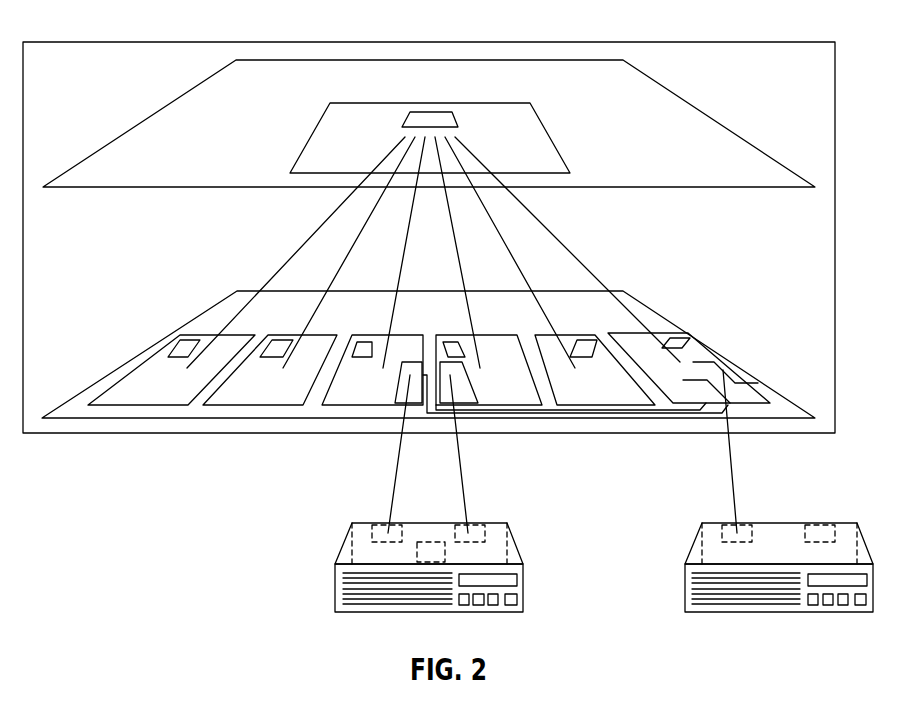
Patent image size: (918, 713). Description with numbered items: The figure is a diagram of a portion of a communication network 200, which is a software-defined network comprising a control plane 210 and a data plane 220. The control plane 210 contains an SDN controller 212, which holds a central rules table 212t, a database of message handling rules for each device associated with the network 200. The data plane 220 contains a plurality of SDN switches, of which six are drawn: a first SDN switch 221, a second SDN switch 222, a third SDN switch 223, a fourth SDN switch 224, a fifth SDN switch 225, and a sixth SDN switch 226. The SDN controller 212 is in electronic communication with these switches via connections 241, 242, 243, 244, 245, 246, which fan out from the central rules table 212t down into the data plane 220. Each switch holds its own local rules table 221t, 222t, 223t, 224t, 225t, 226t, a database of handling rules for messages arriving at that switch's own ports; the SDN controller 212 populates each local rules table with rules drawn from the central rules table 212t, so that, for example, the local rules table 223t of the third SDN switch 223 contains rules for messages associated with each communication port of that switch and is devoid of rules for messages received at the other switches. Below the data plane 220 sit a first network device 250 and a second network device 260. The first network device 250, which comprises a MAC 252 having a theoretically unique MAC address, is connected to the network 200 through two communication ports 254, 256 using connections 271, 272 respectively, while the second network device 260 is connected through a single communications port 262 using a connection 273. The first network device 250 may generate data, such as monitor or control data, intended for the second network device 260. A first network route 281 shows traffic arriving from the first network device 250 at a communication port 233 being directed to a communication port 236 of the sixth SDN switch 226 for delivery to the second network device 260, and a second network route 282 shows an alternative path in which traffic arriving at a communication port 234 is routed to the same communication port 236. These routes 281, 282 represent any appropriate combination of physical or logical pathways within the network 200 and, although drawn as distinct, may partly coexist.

The communication network 200 is at (183, 28).
The control plane 210 is at (603, 100).
The SDN controller 212 is at (527, 140).
The central rules table 212t is at (402, 122).
The data plane 220 is at (527, 323).
The first SDN switch 221 is at (175, 400).
The second SDN switch 222 is at (288, 400).
The third SDN switch 223 is at (390, 400).
The fourth SDN switch 224 is at (527, 400).
The fifth SDN switch 225 is at (617, 399).
The sixth SDN switch 226 is at (698, 344).
The local rules table 221t is at (170, 352).
The local rules table 222t is at (265, 340).
The local rules table 223t is at (365, 340).
The local rules table 224t is at (450, 340).
The local rules table 225t is at (580, 340).
The local rules table 226t is at (675, 337).
The communication port 233 is at (406, 375).
The communication port 234 is at (452, 375).
The communication port 236 is at (730, 372).
The connection 241 is at (268, 283).
The connection 242 is at (344, 262).
The connection 243 is at (406, 243).
The connection 244 is at (455, 240).
The connection 245 is at (516, 260).
The connection 246 is at (588, 270).
The first network device 250 is at (335, 588).
The MAC 252 is at (430, 540).
The communication port 254 is at (357, 527).
The communication port 256 is at (505, 535).
The second network device 260 is at (685, 590).
The communications port 262 is at (752, 530).
The connection 271 is at (390, 500).
The connection 272 is at (465, 478).
The connection 273 is at (727, 442).
The first network route 281 is at (678, 413).
The second network route 282 is at (609, 413).